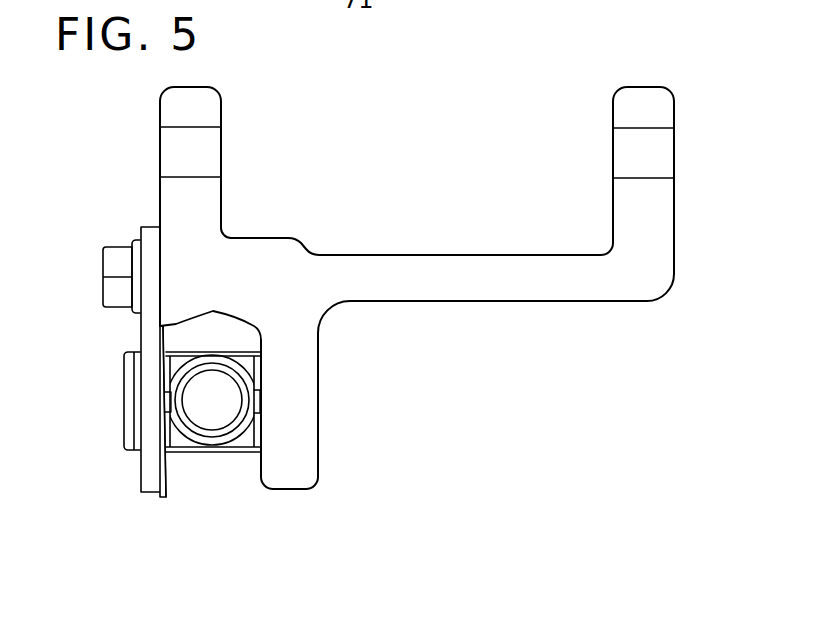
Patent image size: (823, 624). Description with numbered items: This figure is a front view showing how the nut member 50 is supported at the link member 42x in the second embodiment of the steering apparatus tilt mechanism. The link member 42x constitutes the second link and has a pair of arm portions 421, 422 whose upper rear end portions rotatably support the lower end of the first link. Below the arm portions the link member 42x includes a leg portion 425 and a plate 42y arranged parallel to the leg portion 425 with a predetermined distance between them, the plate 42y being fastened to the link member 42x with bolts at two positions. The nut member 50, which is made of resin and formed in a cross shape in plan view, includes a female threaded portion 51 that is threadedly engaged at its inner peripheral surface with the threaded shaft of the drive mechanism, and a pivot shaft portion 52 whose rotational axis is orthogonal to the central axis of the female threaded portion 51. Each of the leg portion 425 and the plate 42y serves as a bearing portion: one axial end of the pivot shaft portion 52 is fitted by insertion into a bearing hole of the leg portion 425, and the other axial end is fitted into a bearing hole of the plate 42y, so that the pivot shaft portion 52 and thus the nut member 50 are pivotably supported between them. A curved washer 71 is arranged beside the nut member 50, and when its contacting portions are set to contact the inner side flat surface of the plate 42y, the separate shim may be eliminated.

The link member 42x is at (690, 104).
The arm portion 421 is at (172, 197).
The arm portion 422 is at (652, 202).
The leg portion 425 is at (300, 400).
The pivot shaft portion 52 is at (250, 348).
The plate 42y is at (152, 480).
The nut member 50 is at (211, 465).
The female threaded portion 51 is at (235, 438).
The curved washer 71 is at (168, 458).